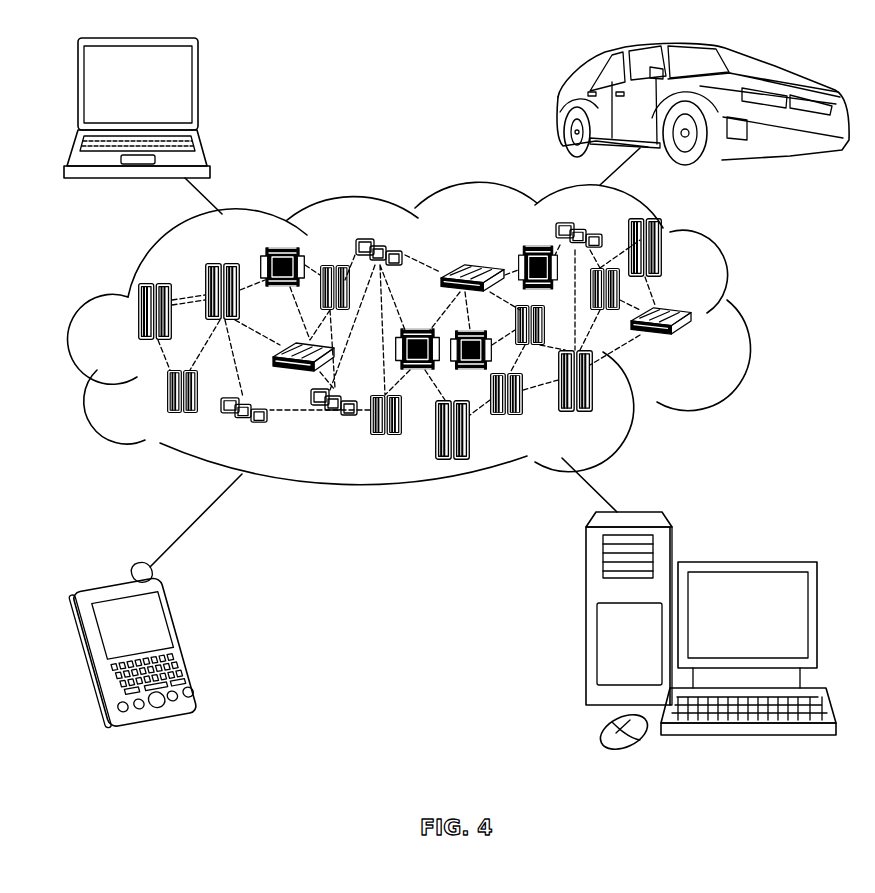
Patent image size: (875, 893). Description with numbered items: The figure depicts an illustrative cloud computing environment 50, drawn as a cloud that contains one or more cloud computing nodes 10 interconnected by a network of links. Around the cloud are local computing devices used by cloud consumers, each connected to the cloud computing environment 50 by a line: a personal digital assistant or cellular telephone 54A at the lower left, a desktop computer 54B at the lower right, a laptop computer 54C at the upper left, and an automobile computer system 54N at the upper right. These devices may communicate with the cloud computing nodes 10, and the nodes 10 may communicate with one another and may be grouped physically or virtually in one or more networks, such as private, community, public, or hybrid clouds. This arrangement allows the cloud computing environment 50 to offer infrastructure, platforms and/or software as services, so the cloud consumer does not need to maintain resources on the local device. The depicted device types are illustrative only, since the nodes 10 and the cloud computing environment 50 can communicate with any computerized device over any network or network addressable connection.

The cloud computing nodes 10 is at (702, 349).
The cloud computing environment 50 is at (746, 320).
The personal digital assistant or cellular telephone 54A is at (190, 637).
The desktop computer 54B is at (745, 562).
The laptop computer 54C is at (198, 93).
The automobile computer system 54N is at (557, 106).